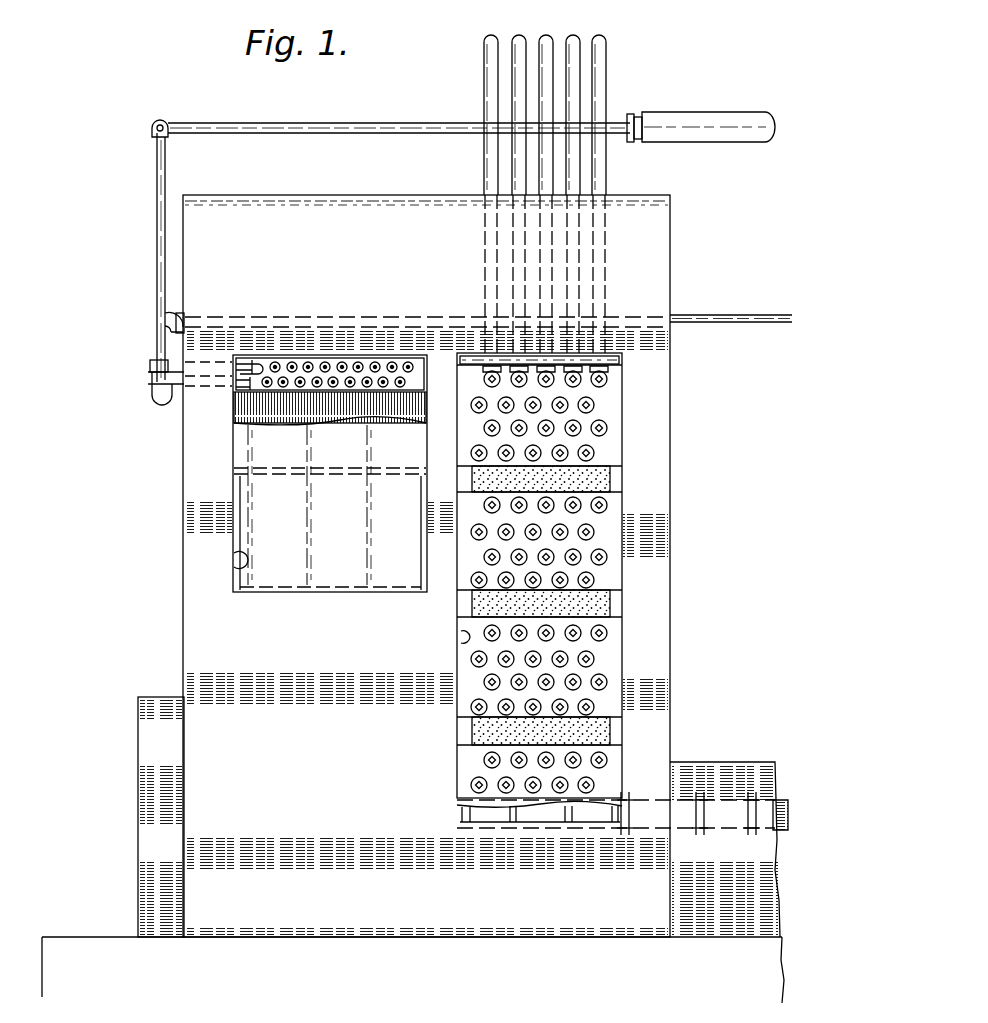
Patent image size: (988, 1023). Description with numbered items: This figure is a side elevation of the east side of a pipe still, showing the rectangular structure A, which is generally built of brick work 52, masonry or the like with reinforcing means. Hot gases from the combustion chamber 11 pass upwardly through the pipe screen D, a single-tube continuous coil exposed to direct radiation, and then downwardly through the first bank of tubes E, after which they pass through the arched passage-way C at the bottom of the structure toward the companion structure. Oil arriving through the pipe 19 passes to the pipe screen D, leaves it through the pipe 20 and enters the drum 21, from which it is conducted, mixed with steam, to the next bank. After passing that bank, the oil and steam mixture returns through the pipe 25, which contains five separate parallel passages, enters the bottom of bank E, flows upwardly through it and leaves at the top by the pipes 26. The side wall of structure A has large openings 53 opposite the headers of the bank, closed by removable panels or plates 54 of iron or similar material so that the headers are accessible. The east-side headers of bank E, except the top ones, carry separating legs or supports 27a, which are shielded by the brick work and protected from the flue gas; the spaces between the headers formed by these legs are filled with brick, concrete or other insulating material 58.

The rectangular structure A is at (368, 226).
The arched passage-way C is at (745, 770).
The pipe screen D is at (275, 389).
The first bank of tubes E is at (595, 416).
The combustion chamber 11 is at (310, 411).
The pipe 19 is at (729, 326).
The pipe 20 is at (160, 234).
The drum 21 is at (726, 130).
The pipe 25 is at (781, 801).
The pipes 26 is at (520, 96).
The separating legs or supports 27a is at (613, 484).
The brick work 52 is at (655, 514).
The openings 53 is at (243, 573).
The panels or plates 54 is at (331, 541).
The insulating material 58 is at (610, 477).